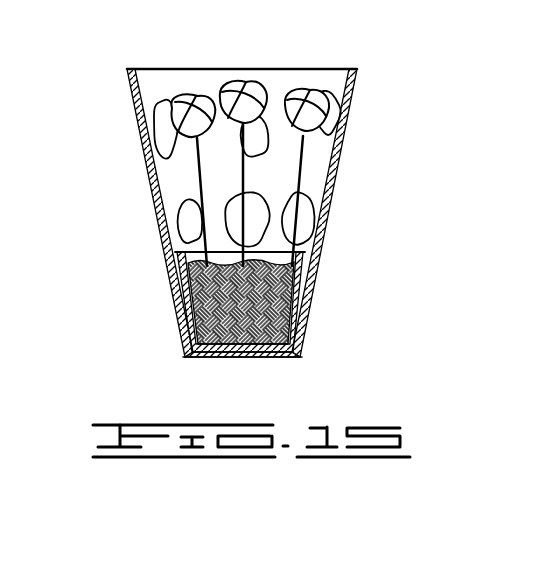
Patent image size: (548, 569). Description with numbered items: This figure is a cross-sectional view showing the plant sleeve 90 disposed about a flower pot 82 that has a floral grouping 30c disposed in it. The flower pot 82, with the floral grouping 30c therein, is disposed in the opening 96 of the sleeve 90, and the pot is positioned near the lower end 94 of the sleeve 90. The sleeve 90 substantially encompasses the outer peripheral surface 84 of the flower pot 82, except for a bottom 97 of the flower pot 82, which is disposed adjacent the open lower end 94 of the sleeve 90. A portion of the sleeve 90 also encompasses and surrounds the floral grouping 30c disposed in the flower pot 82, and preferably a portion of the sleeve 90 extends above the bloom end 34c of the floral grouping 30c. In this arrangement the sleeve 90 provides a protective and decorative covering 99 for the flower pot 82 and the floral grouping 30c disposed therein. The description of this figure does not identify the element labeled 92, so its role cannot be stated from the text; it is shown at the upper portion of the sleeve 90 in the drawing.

The floral grouping 30c is at (322, 89).
The bloom end 34c is at (327, 108).
The flower pot 82 is at (303, 292).
The outer peripheral surface 84 is at (186, 297).
The sleeve 90 is at (143, 145).
The upper end of pot 92 is at (129, 69).
The lower end 94 is at (188, 357).
The opening 96 is at (202, 85).
The bottom 97 is at (280, 356).
The decorative covering 99 is at (240, 210).